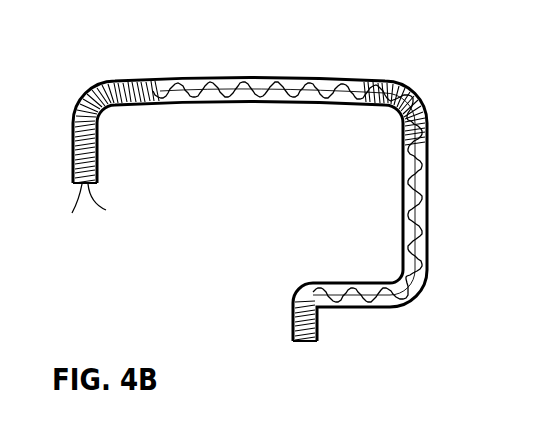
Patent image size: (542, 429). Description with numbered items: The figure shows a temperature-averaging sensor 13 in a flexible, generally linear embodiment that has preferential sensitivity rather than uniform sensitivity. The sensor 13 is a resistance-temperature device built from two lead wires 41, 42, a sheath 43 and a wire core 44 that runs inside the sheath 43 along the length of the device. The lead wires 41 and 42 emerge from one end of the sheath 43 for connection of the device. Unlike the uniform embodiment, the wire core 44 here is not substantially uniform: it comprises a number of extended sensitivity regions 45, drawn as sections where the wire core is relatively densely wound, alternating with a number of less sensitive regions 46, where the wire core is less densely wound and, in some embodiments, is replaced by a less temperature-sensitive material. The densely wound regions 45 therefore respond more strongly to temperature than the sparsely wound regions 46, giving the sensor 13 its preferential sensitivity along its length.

The temperature-averaging sensor 13 is at (53, 86).
The lead wire 41 is at (62, 222).
The lead wire 42 is at (118, 224).
The sheath 43 is at (410, 306).
The wire core 44 is at (110, 126).
The extended sensitivity regions 45 is at (119, 70).
The less sensitive regions 46 is at (198, 70).